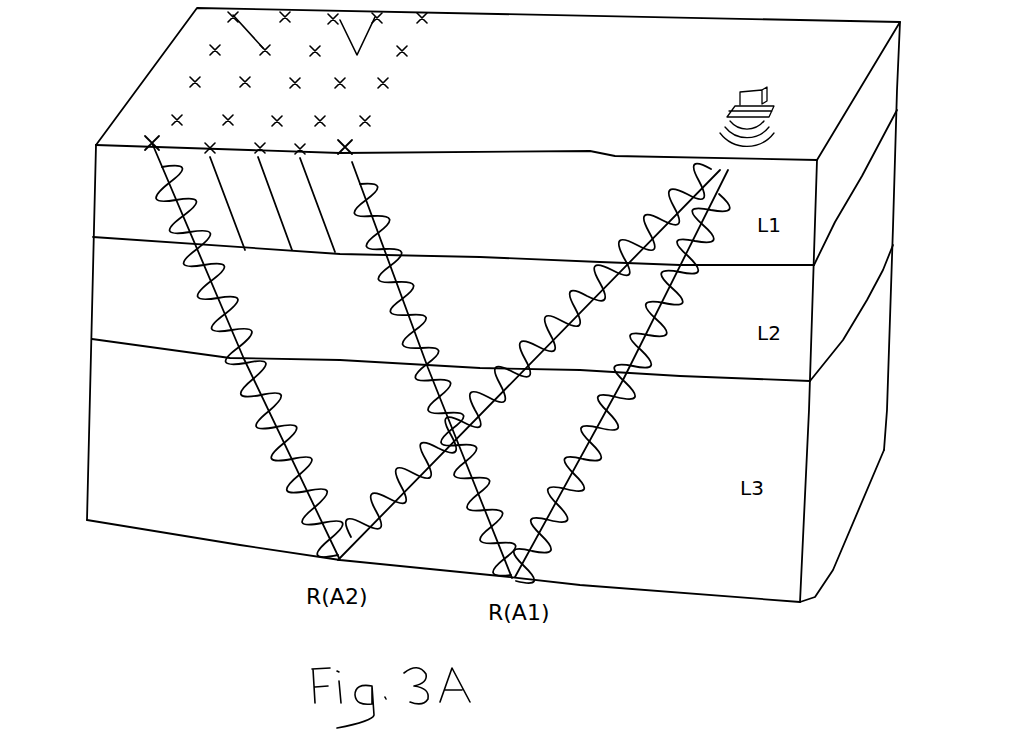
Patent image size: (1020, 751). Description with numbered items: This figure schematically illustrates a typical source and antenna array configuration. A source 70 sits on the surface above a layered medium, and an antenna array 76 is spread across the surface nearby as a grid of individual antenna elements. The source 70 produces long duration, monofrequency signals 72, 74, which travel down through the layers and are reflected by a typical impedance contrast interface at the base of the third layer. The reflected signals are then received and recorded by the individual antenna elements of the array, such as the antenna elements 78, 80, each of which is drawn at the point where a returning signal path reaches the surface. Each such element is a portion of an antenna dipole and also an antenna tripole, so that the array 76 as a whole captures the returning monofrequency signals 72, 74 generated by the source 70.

The source 70 is at (727, 102).
The monofrequency signal 72 is at (615, 432).
The monofrequency signal 74 is at (545, 322).
The antenna array 76 is at (181, 50).
The antenna element 78 is at (357, 147).
The antenna element 80 is at (140, 135).